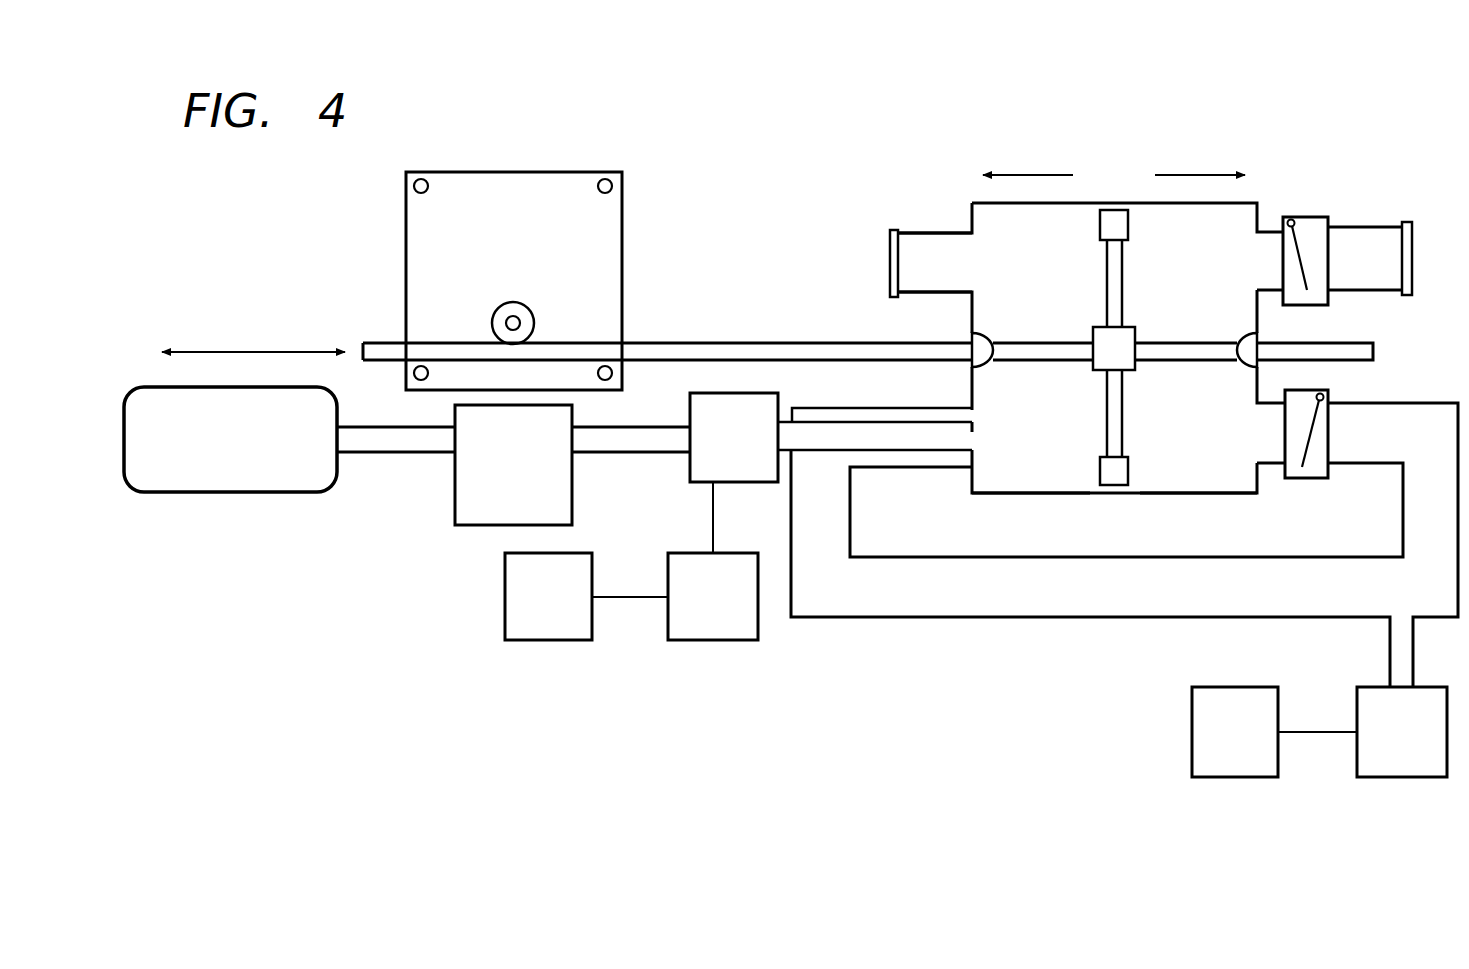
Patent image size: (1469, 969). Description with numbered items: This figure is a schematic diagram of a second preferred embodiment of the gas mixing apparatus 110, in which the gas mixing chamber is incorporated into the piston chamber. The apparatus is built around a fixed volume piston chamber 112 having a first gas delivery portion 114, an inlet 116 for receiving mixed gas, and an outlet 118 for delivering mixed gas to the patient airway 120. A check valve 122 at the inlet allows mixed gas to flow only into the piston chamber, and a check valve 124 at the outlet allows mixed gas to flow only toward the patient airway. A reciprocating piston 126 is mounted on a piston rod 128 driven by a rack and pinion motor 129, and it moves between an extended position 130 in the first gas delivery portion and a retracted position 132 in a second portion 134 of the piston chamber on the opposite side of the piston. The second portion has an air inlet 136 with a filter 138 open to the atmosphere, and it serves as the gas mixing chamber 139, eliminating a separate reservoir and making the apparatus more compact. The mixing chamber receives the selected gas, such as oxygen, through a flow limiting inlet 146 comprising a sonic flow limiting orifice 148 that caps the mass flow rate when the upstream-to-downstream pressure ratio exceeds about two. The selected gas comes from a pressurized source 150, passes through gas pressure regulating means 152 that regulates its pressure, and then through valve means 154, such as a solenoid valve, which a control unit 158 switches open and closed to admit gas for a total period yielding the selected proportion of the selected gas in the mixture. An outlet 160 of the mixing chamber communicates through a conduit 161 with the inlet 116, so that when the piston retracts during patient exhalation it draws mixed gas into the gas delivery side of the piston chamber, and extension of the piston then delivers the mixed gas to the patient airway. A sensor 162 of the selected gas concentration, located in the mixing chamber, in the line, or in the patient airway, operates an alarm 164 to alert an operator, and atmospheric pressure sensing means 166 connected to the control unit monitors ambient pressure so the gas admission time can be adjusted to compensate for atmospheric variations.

The gas mixing apparatus 110 is at (1384, 114).
The fixed volume piston chamber 112 is at (1135, 494).
The first gas delivery portion 114 is at (1230, 494).
The inlet 116 is at (1268, 403).
The outlet 118 is at (1268, 222).
The patient airway 120 is at (1368, 227).
The check valve 122 is at (1318, 470).
The check valve 124 is at (1297, 294).
The reciprocating piston 126 is at (1113, 268).
The piston rod 128 is at (748, 348).
The rack and pinion motor 129 is at (605, 242).
The extended position 130 is at (1225, 177).
The retracted position 132 is at (1005, 177).
The second portion of the piston chamber 134 is at (1027, 494).
The air inlet 136 is at (921, 232).
The filter 138 is at (887, 262).
The gas mixing chamber 139 is at (1053, 466).
The flow limiting inlet 146 is at (858, 430).
The sonic flow limiting orifice 148 is at (975, 428).
The source of the selected gas 150 is at (253, 465).
The gas pressure regulating means 152 is at (464, 497).
The valve means 154 is at (698, 476).
The control unit 158 is at (736, 655).
The outlet 160 is at (805, 518).
The conduit 161 is at (1030, 600).
The sensor 162 is at (1425, 762).
The alarm 164 is at (1232, 762).
The atmospheric pressure sensing means 166 is at (545, 655).